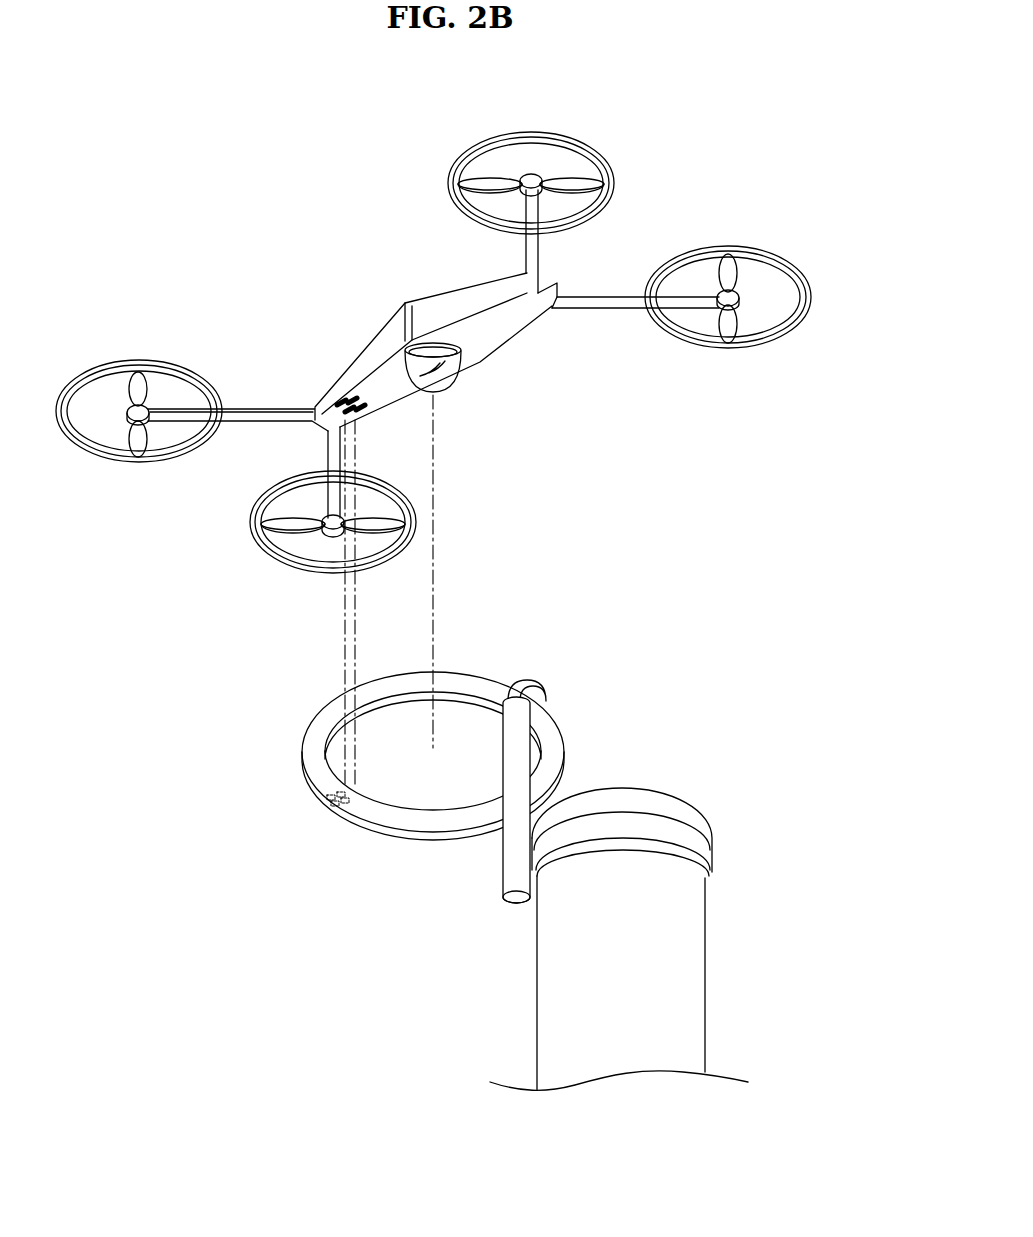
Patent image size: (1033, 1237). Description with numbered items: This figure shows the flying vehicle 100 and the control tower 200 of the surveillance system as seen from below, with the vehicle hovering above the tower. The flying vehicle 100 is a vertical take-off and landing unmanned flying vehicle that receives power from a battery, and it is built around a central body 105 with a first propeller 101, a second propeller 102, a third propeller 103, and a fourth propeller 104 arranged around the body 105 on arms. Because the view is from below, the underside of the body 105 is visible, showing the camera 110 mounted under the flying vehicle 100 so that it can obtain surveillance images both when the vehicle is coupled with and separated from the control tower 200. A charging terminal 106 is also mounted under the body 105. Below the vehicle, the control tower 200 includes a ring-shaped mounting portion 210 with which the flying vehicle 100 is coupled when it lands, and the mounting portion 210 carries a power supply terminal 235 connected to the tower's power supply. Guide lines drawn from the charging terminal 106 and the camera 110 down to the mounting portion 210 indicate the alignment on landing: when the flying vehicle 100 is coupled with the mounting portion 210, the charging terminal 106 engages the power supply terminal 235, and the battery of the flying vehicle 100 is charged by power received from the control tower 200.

The flying vehicle 100 is at (652, 148).
The first propeller 101 is at (531, 132).
The second propeller 102 is at (728, 245).
The third propeller 103 is at (293, 558).
The fourth propeller 104 is at (139, 358).
The body 105 is at (449, 306).
The charging terminal 106 is at (358, 416).
The camera 110 is at (448, 384).
The control tower 200 is at (668, 722).
The mounting portion 210 is at (312, 757).
The power supply terminal 235 is at (342, 812).